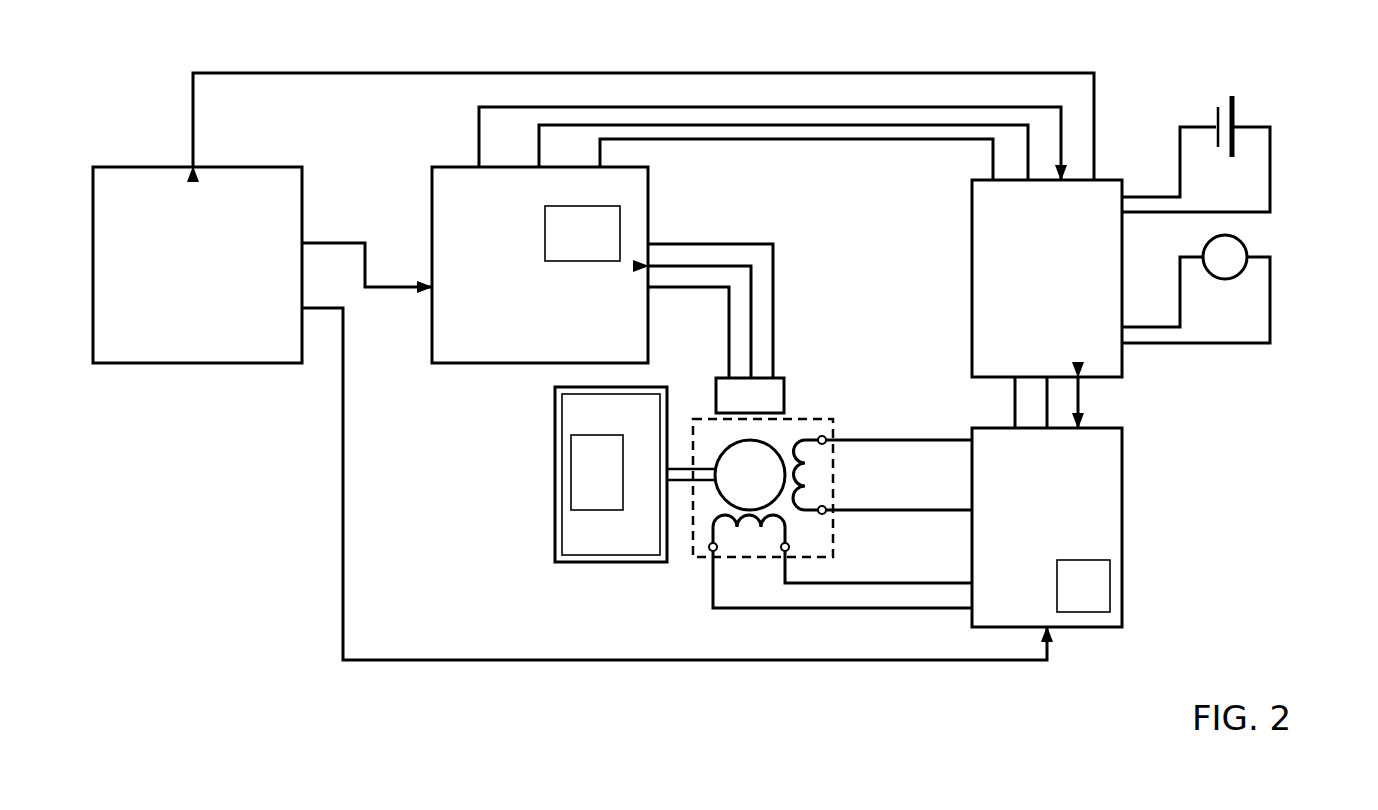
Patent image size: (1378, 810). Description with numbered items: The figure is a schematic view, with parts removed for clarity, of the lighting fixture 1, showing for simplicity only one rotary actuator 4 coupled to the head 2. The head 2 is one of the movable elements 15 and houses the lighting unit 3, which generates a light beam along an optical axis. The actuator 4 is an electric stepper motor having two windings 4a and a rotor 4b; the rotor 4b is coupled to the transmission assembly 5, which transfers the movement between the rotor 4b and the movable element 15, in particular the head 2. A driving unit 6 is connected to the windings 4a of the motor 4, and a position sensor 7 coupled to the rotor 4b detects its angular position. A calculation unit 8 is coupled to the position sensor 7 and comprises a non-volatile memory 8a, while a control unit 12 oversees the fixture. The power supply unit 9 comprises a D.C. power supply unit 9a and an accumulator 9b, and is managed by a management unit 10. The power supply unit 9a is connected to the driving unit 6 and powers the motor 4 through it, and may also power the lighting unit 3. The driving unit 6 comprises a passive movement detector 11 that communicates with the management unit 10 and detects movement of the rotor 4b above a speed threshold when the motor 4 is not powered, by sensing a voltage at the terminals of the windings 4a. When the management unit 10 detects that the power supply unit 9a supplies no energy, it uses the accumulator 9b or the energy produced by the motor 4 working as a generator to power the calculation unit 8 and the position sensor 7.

The lighting fixture 1 is at (252, 603).
The head 2 is at (617, 539).
The lighting unit 3 is at (583, 485).
The rotary actuator 4 is at (846, 407).
The windings 4a is at (802, 468).
The rotor 4b is at (765, 460).
The transmission assembly 5 is at (680, 476).
The driving unit 6 is at (1078, 520).
The position sensor 7 is at (722, 390).
The calculation unit 8 is at (441, 200).
The non-volatile memory 8a is at (590, 238).
The power supply unit 9 is at (1279, 237).
The power supply unit 9a is at (1230, 262).
The accumulator 9b is at (1218, 91).
The management unit 10 is at (995, 262).
The passive movement detector 11 is at (1080, 597).
The control unit 12 is at (241, 338).
The movable element 15 is at (556, 571).